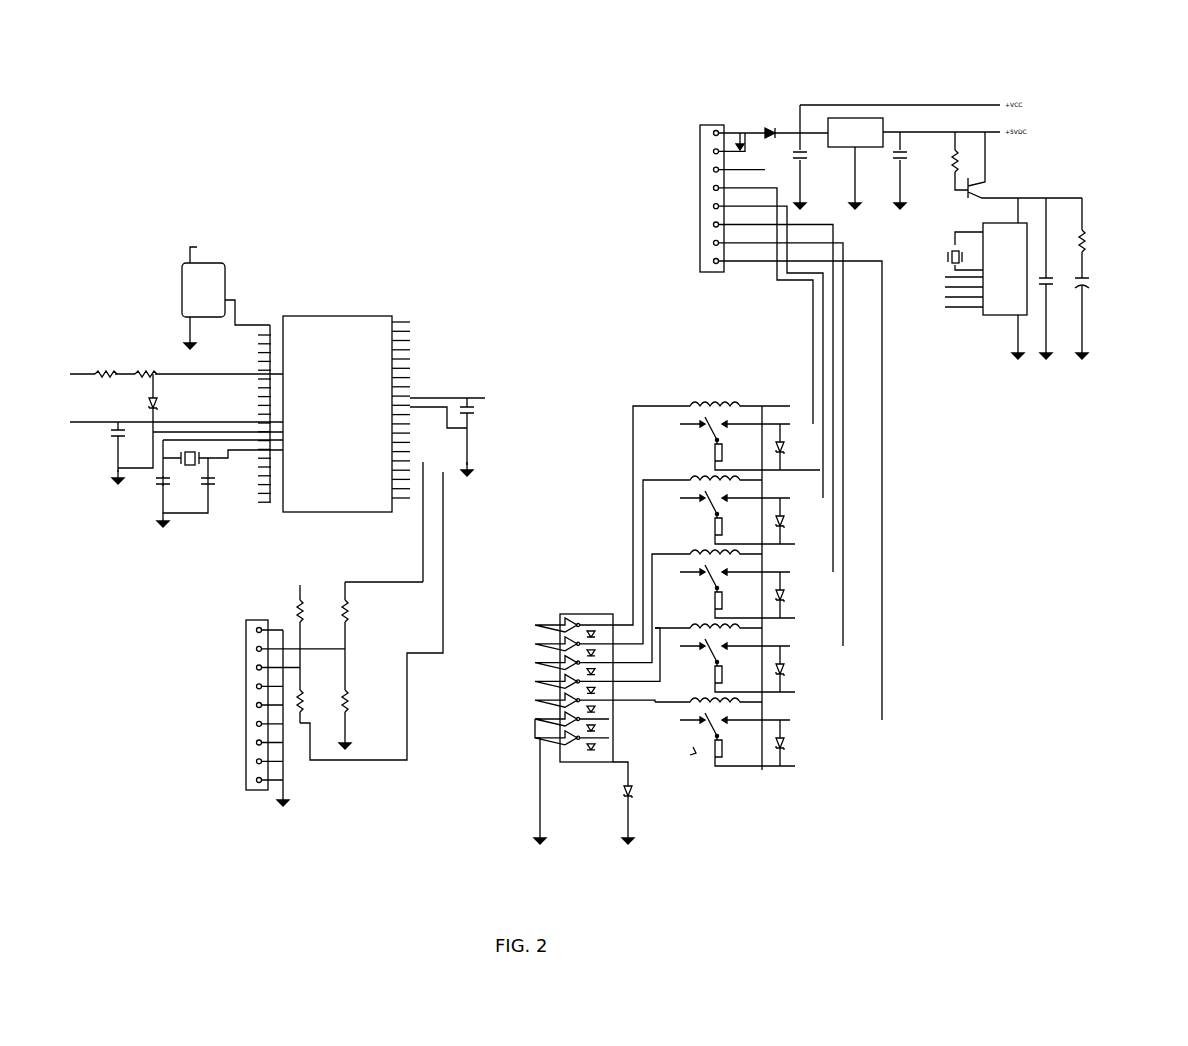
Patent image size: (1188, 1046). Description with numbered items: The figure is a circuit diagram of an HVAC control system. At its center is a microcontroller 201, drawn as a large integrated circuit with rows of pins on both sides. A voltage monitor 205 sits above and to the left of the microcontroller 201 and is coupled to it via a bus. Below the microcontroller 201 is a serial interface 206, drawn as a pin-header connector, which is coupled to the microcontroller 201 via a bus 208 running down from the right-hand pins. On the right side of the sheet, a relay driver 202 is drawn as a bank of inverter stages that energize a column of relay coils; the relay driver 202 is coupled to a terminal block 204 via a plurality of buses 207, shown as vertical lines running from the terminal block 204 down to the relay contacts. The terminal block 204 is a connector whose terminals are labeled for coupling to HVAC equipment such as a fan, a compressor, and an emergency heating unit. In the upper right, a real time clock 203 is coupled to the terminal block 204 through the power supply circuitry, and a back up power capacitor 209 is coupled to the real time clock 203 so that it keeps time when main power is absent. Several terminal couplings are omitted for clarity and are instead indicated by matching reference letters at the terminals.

The microcontroller 201 is at (395, 318).
The relay driver 202 is at (580, 765).
The real time clock 203 is at (990, 316).
The terminal block 204 is at (722, 125).
The voltage monitor 205 is at (228, 276).
The serial interface 206 is at (249, 790).
The plurality of buses 207 is at (882, 505).
The bus 208 is at (425, 506).
The back up power capacitor 209 is at (1093, 282).